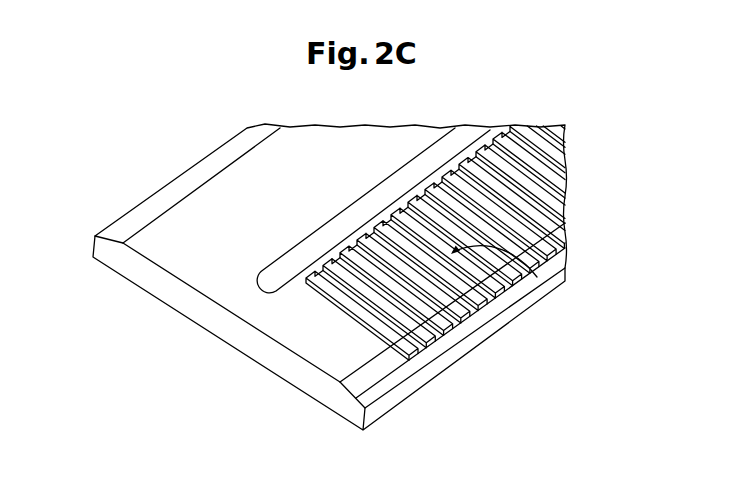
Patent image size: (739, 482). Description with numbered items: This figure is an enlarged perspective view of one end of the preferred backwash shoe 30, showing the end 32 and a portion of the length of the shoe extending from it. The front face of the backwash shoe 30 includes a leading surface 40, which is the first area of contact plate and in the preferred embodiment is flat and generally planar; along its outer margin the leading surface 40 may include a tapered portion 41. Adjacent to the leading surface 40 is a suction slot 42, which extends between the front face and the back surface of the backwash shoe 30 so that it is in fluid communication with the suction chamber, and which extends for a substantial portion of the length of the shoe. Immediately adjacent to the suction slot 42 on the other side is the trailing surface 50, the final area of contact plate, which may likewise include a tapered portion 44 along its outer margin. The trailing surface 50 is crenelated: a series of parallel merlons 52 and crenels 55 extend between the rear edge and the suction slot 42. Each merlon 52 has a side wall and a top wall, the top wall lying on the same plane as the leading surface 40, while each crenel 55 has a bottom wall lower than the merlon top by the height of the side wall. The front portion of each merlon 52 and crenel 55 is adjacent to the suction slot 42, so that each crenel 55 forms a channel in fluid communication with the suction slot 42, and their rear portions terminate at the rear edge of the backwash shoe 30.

The backwash shoe 30 is at (100, 289).
The end 32 is at (200, 313).
The leading surface 40 is at (216, 206).
The tapered portion 41 is at (235, 147).
The suction slot 42 is at (264, 283).
The tapered portion 44 is at (382, 379).
The trailing surface 50 is at (459, 265).
The merlon 52 is at (446, 294).
The crenel 55 is at (405, 364).